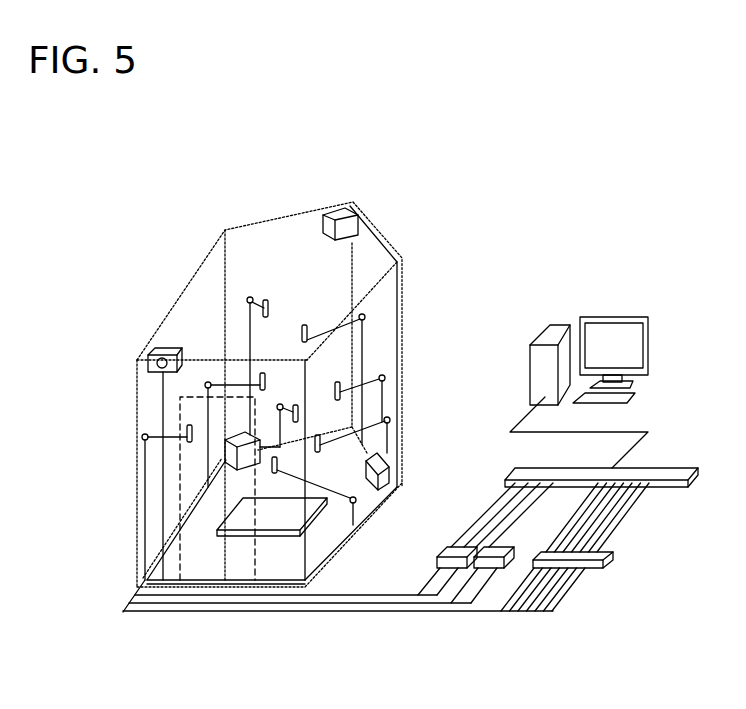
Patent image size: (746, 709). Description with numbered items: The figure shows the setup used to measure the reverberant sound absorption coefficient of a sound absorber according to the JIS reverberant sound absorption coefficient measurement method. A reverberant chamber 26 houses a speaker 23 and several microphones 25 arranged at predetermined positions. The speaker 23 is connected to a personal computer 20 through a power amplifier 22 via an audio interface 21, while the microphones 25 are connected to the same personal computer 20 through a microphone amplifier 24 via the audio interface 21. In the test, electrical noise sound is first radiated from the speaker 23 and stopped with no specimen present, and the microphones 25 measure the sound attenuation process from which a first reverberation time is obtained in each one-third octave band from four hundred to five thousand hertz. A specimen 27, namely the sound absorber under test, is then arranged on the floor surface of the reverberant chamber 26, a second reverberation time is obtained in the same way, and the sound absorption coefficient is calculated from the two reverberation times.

The personal computer 20 is at (619, 311).
The audio interface 21 is at (682, 468).
The power amplifier 22 is at (438, 550).
The speaker 23 is at (168, 350).
The microphone amplifier 24 is at (608, 570).
The microphones 25 is at (267, 300).
The reverberant chamber 26 is at (310, 211).
The specimen 27 is at (237, 537).